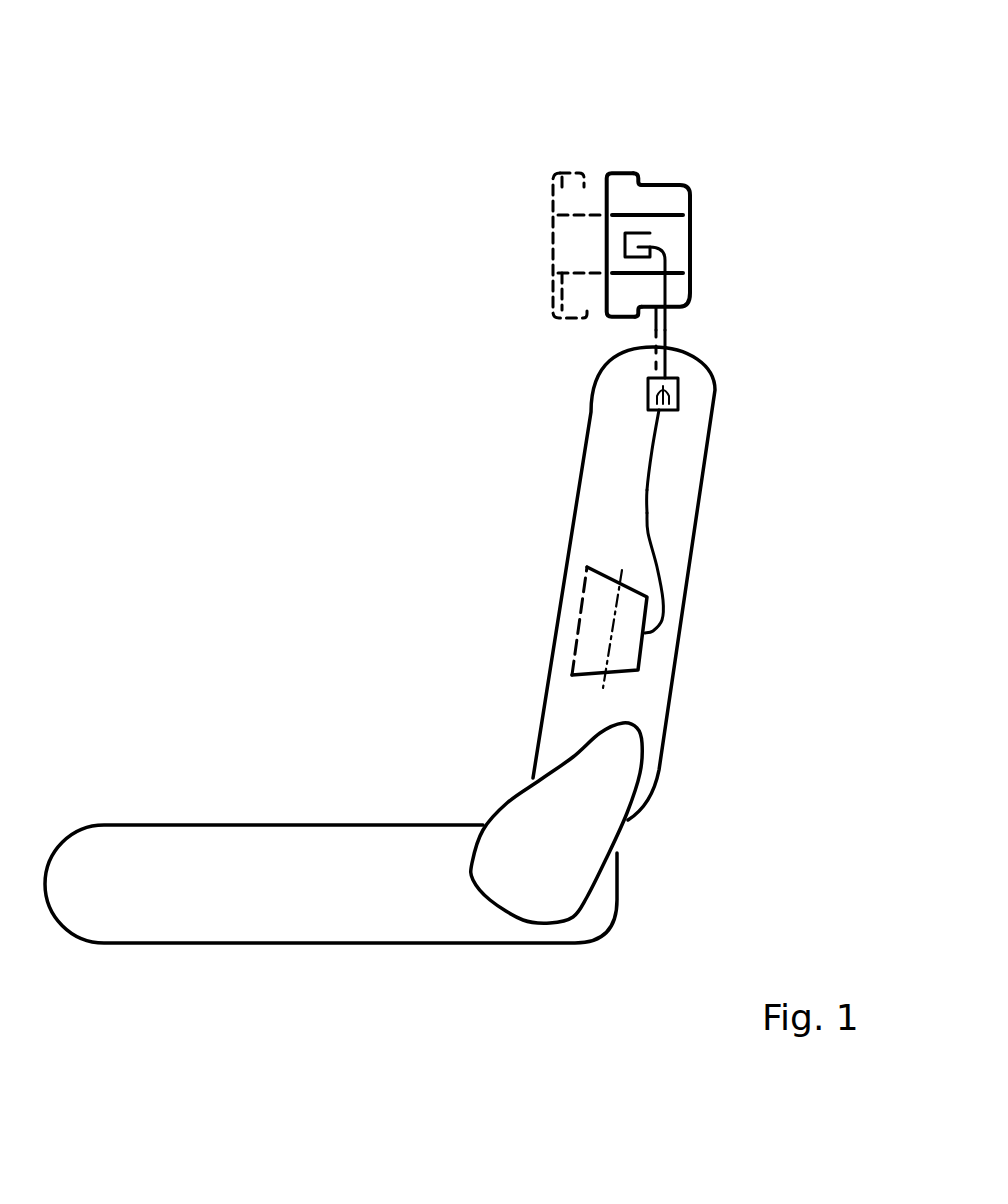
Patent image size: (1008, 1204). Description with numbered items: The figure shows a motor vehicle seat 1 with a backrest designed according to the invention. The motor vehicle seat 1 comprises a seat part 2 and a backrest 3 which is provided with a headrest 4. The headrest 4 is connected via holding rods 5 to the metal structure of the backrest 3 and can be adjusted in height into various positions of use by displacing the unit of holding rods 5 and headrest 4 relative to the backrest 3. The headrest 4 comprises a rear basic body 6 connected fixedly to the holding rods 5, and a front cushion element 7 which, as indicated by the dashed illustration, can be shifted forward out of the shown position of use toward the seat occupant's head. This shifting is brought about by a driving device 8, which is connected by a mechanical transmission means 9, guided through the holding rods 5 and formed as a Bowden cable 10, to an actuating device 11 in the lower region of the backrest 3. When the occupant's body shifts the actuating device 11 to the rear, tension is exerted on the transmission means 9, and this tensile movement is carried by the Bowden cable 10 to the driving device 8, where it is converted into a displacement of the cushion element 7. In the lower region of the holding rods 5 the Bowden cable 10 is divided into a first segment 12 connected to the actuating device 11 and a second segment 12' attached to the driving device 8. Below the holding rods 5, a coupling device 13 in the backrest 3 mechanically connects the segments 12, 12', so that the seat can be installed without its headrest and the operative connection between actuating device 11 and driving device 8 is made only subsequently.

The motor vehicle seat 1 is at (454, 478).
The seat part 2 is at (255, 857).
The backrest 3 is at (690, 430).
The headrest 4 is at (577, 171).
The holding rods 5 is at (670, 323).
The rear basic body 6 is at (687, 247).
The front cushion element 7 is at (627, 171).
The driving device 8 is at (660, 237).
The mechanical transmission means 9 is at (652, 424).
The Bowden cable 10 is at (645, 472).
The actuating device 11 is at (623, 650).
The first segment 12 is at (737, 551).
The second segment 12' is at (541, 371).
The coupling device 13 is at (690, 393).